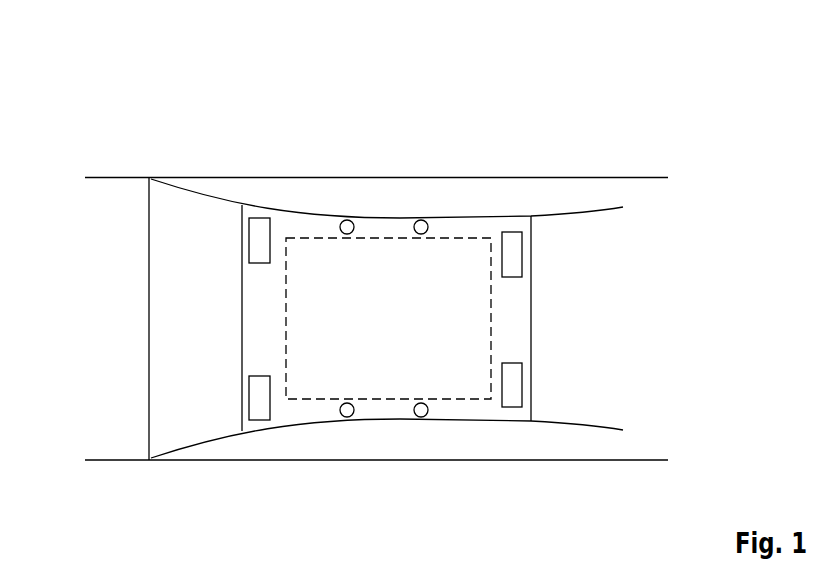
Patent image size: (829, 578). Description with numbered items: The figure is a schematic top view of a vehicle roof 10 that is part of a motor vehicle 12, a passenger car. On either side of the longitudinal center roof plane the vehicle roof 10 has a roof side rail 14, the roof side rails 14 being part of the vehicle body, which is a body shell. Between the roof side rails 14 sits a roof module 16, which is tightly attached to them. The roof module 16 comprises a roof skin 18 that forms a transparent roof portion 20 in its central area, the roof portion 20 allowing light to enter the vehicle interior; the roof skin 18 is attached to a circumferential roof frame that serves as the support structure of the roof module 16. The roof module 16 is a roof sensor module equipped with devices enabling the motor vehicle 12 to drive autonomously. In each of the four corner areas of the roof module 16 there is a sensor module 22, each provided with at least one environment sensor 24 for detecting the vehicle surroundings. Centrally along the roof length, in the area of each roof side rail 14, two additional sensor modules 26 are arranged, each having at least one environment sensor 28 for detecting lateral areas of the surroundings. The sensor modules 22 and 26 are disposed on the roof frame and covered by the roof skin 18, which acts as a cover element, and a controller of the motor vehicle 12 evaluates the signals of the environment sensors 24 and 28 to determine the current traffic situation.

The vehicle roof 10 is at (465, 217).
The motor vehicle 12 is at (657, 150).
The roof side rail 14 is at (373, 218).
The roof module 16 is at (260, 317).
The roof skin 18 is at (525, 330).
The roof portion 20 is at (462, 363).
The sensor module 22 is at (389, 319).
The environment sensor 24 is at (260, 242).
The additional sensor module 26 is at (361, 319).
The environment sensor 28 is at (347, 220).